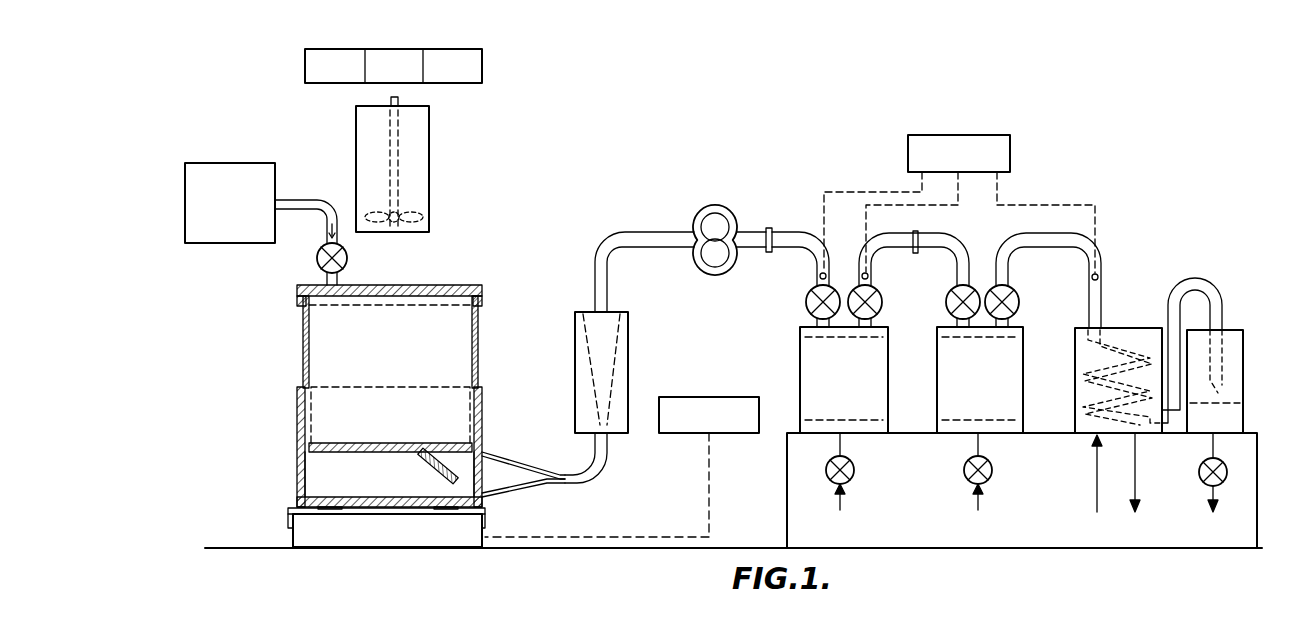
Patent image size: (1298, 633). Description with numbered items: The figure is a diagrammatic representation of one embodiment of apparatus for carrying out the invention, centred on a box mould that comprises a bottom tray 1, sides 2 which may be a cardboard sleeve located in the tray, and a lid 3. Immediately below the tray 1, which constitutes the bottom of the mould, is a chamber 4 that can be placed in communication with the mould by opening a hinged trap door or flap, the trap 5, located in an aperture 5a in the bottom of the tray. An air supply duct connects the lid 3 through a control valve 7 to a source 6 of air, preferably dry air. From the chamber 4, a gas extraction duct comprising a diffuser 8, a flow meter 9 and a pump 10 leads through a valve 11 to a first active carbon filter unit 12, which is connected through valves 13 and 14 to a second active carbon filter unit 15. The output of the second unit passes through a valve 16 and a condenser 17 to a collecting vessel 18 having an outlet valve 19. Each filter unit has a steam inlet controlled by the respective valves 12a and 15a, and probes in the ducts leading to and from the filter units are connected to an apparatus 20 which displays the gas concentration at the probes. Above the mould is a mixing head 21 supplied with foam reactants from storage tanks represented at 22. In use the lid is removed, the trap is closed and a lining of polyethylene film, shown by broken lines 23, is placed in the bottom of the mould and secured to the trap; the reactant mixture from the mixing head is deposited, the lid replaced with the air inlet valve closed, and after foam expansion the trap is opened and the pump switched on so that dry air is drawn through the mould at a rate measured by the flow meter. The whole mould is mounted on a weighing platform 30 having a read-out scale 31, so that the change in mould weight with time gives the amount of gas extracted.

The bottom tray 1 is at (297, 408).
The sides 2 is at (303, 352).
The lid 3 is at (447, 285).
The chamber 4 is at (318, 473).
The trap 5 is at (430, 468).
The aperture 5a is at (445, 447).
The source of air 6 is at (230, 203).
The control valve 7 is at (318, 258).
The diffuser 8 is at (518, 480).
The flow meter 9 is at (622, 360).
The pump 10 is at (710, 220).
The valve 11 is at (808, 301).
The first active carbon filter unit 12 is at (805, 386).
The steam inlet valve 12a is at (857, 470).
The valve 13 is at (880, 303).
The valve 14 is at (948, 311).
The second active carbon filter unit 15 is at (1023, 392).
The steam inlet valve 15a is at (995, 470).
The valve 16 is at (1013, 308).
The condenser 17 is at (1085, 360).
The collecting vessel 18 is at (1228, 375).
The outlet valve 19 is at (1198, 472).
The gas concentration display apparatus 20 is at (957, 152).
The mixing head 21 is at (415, 160).
The storage tanks 22 is at (405, 58).
The lining 23 is at (318, 432).
The weighing platform 30 is at (362, 537).
The read-out scale 31 is at (733, 420).